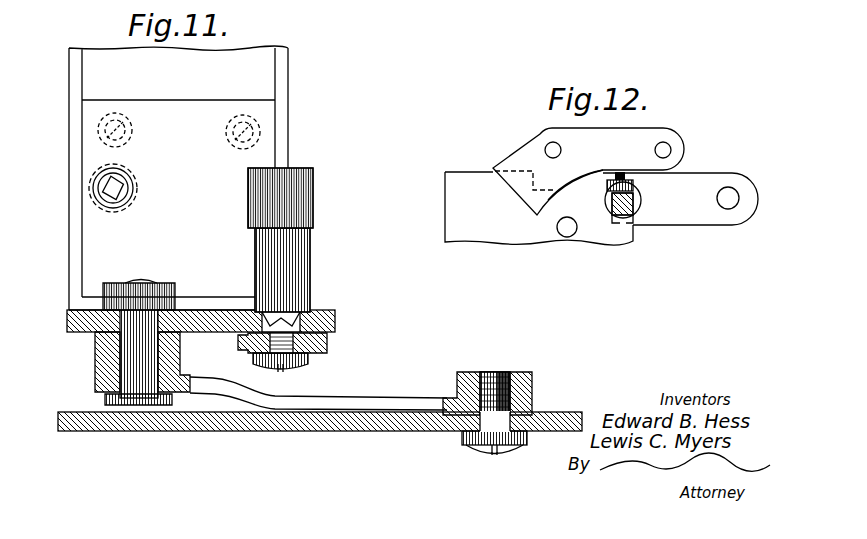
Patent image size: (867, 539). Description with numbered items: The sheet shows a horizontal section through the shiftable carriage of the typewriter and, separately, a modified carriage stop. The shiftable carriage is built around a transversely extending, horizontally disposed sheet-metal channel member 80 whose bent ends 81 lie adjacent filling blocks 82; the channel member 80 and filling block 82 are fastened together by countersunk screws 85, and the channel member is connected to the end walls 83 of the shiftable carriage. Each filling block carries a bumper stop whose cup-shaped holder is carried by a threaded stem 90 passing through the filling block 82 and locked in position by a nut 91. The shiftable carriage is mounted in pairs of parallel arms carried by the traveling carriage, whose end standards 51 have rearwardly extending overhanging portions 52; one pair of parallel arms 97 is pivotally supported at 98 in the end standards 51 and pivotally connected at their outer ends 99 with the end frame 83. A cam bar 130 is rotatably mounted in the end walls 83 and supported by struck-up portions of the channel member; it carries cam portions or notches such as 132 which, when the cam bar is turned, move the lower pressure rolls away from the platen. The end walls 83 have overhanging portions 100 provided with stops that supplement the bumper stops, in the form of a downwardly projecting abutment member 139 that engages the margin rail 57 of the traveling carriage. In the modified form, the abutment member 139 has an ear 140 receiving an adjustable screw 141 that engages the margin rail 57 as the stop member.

In FIG. 11, the end standards 51 is at (363, 433).
In FIG. 11, the channel member 80 is at (178, 178).
In FIG. 11, the bent ends 81 is at (205, 308).
In FIG. 11, the filling blocks 82 is at (178, 219).
In FIG. 11, the end walls 83 is at (67, 320).
In FIG. 11, the counter-sunk screws 85 is at (227, 131).
In FIG. 11, the threaded stem 90 is at (98, 197).
In FIG. 11, the nut 91 is at (97, 185).
In FIG. 11, the parallel arms 97 is at (374, 400).
In FIG. 11, the pivot 98 is at (457, 388).
In FIG. 11, the outer ends 99 is at (103, 397).
In FIG. 11, the cam bar 130 is at (311, 366).
In FIG. 11, the cam portion 132 is at (308, 273).
In FIG. 12, the overhanging portions 100 is at (588, 171).
In FIG. 12, the overhanging portions 52 is at (698, 225).
In FIG. 12, the margin rail 57 is at (626, 211).
In FIG. 12, the abutment member 139 is at (620, 178).
In FIG. 12, the ear 140 is at (606, 186).
In FIG. 12, the adjustable screw 141 is at (617, 172).